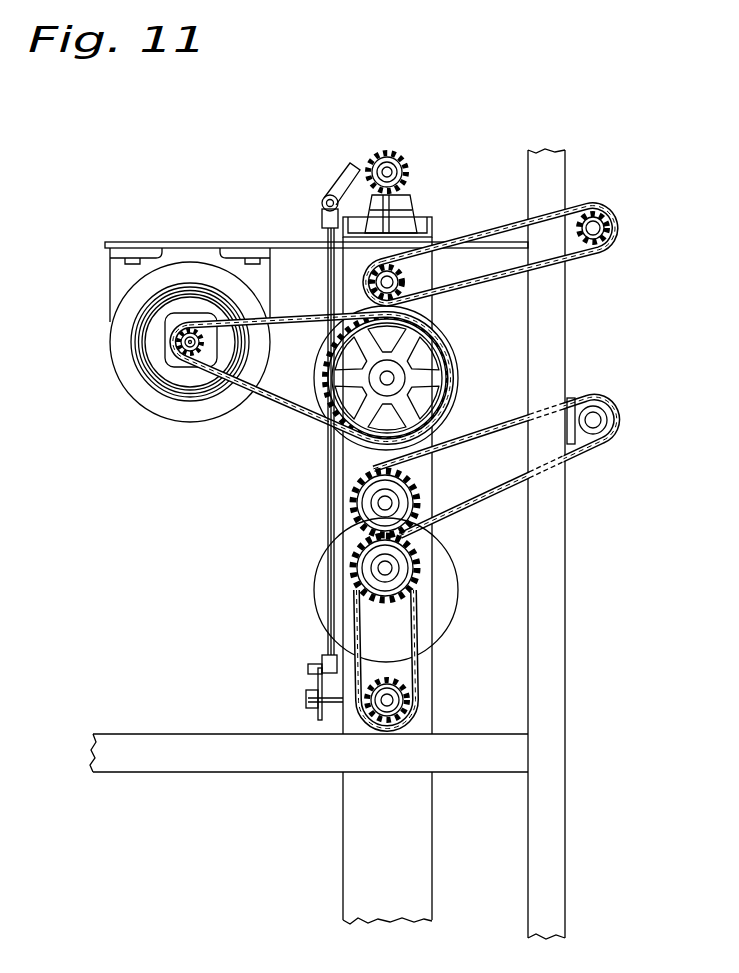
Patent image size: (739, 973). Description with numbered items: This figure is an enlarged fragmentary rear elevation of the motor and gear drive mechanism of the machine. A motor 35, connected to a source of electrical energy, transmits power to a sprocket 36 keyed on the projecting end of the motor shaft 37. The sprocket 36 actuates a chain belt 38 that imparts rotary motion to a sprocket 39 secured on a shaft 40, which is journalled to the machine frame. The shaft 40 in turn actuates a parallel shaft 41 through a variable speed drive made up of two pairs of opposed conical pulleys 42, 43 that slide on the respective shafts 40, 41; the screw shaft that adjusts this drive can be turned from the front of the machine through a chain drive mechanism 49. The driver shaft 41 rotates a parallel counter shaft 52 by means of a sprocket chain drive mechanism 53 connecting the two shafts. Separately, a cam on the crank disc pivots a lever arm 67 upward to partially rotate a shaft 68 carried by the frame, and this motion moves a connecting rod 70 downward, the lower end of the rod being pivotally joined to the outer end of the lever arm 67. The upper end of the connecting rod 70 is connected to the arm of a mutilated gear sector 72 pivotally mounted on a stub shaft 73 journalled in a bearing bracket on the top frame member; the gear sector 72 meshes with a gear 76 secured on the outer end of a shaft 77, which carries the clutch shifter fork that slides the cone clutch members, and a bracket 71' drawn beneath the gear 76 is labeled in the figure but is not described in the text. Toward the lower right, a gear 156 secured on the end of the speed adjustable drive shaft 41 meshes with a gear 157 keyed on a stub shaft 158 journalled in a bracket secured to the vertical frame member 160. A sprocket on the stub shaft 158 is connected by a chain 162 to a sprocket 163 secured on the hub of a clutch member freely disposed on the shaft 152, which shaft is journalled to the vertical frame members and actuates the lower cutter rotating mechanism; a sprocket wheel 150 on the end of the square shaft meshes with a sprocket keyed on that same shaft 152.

The motor 35 is at (140, 330).
The sprocket 36 is at (185, 368).
The motor shaft 37 is at (165, 356).
The chain belt 38 is at (292, 410).
The sprocket 39 is at (323, 368).
The shaft 40 is at (395, 378).
The parallel shaft 41 is at (402, 568).
The opposed conical pulleys 42 is at (445, 336).
The opposed conical pulleys 43 is at (448, 603).
The chain drive mechanism 49 is at (500, 236).
The counter shaft 52 is at (392, 699).
The sprocket chain drive mechanism 53 is at (352, 633).
The lever arm 67 is at (318, 684).
The shaft 68 is at (306, 699).
The connecting rod 70 is at (327, 281).
The pedestal bracket 71' is at (410, 210).
The mutilated gear sector 72 is at (354, 168).
The stub shaft 73 is at (325, 197).
The gear 76 is at (406, 135).
The shaft 77 is at (398, 172).
The sprocket wheel 150 is at (555, 527).
The shaft 152 is at (612, 410).
The gear 156 is at (350, 568).
The gear 157 is at (350, 502).
The stub shaft 158 is at (427, 506).
The vertical frame member 160 is at (378, 459).
The chain 162 is at (518, 409).
The sprocket 163 is at (586, 444).